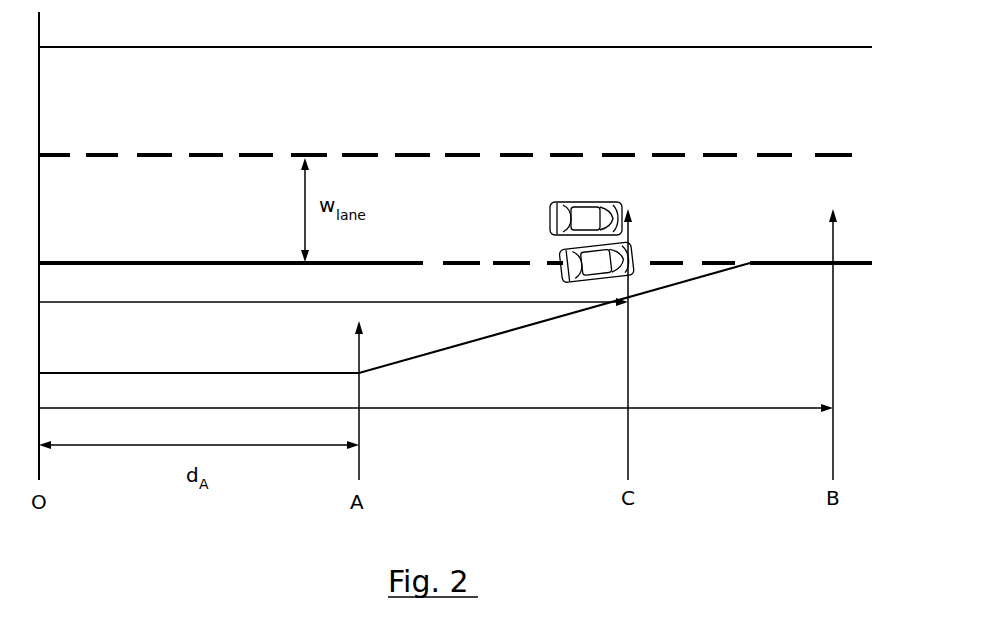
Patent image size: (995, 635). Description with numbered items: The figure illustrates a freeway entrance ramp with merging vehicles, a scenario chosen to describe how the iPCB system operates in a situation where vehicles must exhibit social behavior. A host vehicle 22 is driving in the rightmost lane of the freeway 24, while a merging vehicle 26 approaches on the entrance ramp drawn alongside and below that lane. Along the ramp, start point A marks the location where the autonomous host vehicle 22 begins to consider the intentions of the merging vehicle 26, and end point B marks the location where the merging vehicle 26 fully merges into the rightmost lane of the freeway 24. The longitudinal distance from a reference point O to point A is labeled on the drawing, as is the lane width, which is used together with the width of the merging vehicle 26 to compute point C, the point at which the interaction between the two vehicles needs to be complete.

The host vehicle 22 is at (589, 201).
The freeway 24 is at (678, 188).
The merging vehicle 26 is at (562, 260).